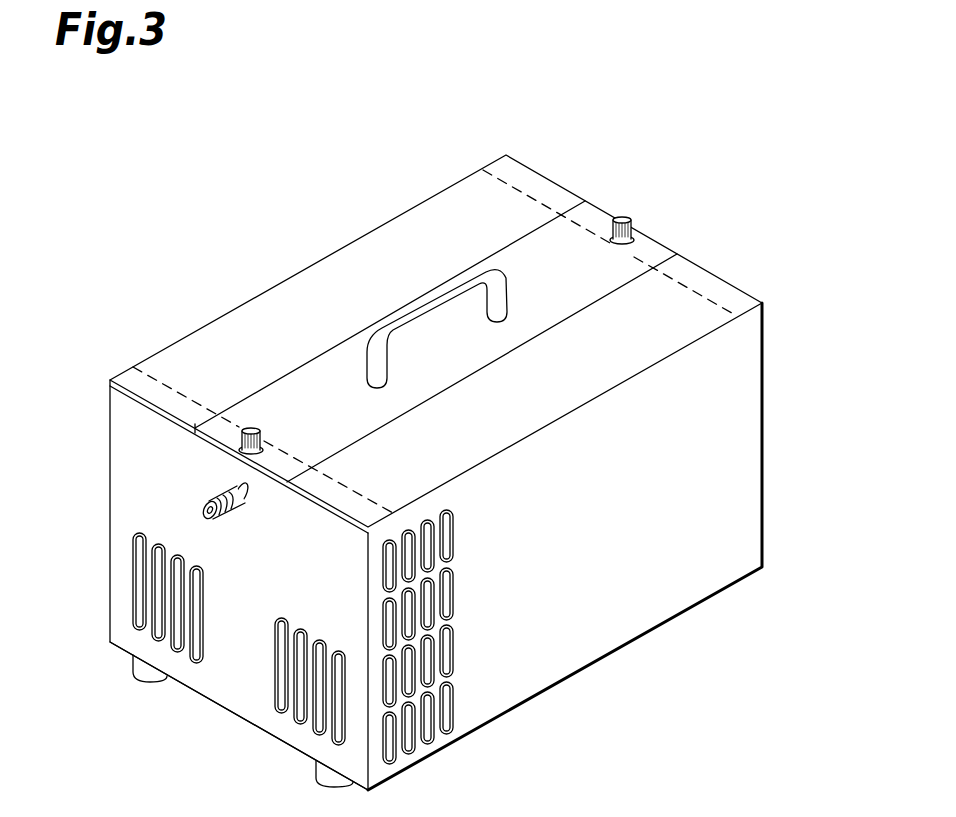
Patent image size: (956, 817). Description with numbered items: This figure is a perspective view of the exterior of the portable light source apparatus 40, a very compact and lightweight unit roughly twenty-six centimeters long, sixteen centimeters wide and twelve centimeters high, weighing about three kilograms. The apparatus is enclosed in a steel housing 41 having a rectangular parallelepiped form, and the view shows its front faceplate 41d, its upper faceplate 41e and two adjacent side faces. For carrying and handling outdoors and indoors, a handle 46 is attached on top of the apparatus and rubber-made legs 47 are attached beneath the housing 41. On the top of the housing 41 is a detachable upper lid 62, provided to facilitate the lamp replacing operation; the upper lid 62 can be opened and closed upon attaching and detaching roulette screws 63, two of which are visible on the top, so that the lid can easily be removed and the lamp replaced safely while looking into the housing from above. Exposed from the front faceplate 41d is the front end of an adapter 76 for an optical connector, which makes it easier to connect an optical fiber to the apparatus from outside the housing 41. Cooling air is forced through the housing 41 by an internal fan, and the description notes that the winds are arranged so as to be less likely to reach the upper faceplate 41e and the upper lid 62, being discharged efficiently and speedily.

The light source apparatus 40 is at (627, 108).
The housing 41 is at (767, 415).
The front faceplate 41d is at (222, 695).
The upper faceplate 41e is at (695, 305).
The handle 46 is at (434, 305).
The legs 47 is at (132, 663).
The upper lid 62 is at (548, 247).
The roulette screws 63 is at (623, 218).
The adapter 76 is at (228, 516).